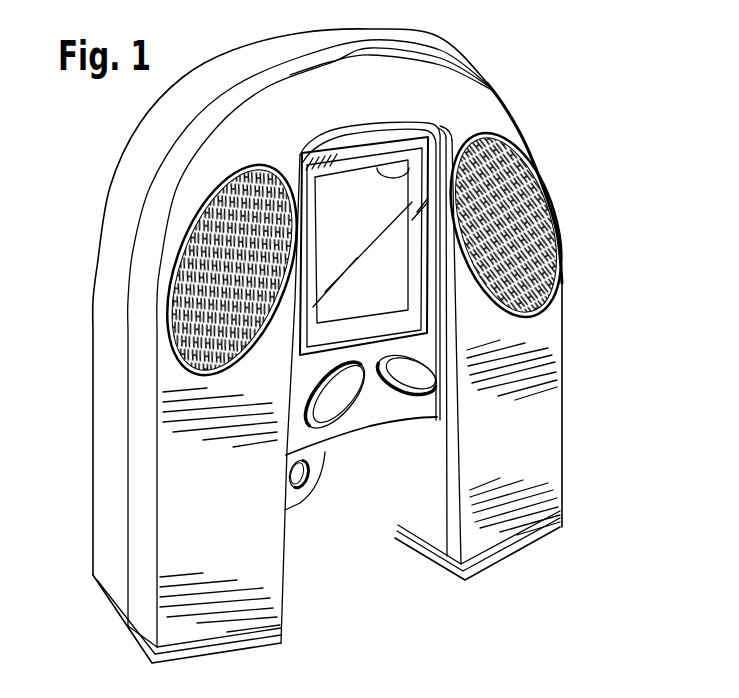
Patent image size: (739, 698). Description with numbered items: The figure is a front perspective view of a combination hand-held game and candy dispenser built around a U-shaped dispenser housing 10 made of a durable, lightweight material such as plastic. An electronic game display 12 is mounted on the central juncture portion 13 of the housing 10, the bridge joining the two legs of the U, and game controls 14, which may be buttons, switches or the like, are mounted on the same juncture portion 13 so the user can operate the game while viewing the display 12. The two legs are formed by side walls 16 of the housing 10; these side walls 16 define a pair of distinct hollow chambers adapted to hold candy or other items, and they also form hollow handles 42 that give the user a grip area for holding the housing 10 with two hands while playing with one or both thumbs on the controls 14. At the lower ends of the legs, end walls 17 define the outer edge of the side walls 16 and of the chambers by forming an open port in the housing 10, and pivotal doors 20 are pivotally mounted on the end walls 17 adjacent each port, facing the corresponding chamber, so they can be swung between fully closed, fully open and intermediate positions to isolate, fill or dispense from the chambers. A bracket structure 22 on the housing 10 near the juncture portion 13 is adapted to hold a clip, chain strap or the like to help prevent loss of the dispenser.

The dispenser housing 10 is at (567, 95).
The electronic game display 12 is at (408, 164).
The central juncture portion 13 is at (355, 428).
The game controls 14 is at (335, 405).
The side walls 16 is at (100, 462).
The end walls 17 is at (281, 632).
The pivotal doors 20 is at (213, 660).
The bracket structure 22 is at (299, 508).
The hollow handles 42 is at (187, 270).